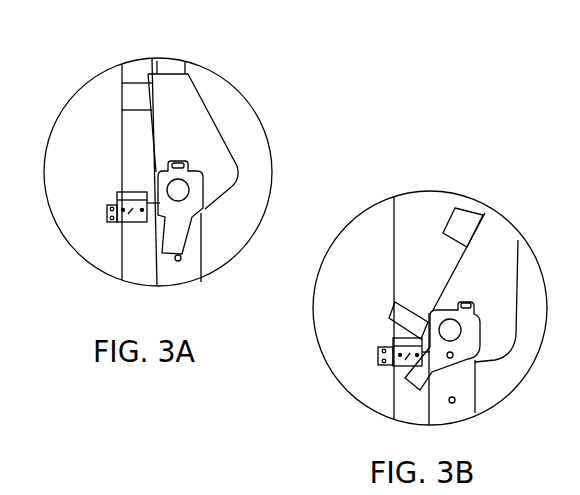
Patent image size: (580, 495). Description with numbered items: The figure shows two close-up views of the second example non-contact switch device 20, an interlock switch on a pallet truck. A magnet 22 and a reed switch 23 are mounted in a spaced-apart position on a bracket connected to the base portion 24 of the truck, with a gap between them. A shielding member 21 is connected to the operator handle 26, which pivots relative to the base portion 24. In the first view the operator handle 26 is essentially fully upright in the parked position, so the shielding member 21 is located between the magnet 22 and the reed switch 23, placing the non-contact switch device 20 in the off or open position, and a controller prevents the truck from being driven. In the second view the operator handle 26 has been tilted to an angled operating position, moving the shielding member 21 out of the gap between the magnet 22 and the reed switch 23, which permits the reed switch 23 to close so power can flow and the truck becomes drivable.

In FIG. 3A, the non-contact switch device 20 is at (262, 121).
In FIG. 3B, the non-contact switch device 20 is at (504, 401).
In FIG. 3A, the shielding member 21 is at (132, 193).
In FIG. 3B, the shielding member 21 is at (402, 310).
In FIG. 3A, the magnet 22 is at (110, 208).
In FIG. 3B, the magnet 22 is at (388, 350).
In FIG. 3A, the reed switch 23 is at (127, 208).
In FIG. 3B, the reed switch 23 is at (407, 352).
In FIG. 3A, the base portion 24 is at (130, 150).
In FIG. 3B, the base portion 24 is at (405, 255).
In FIG. 3A, the operator handle 26 is at (177, 97).
In FIG. 3B, the operator handle 26 is at (498, 247).